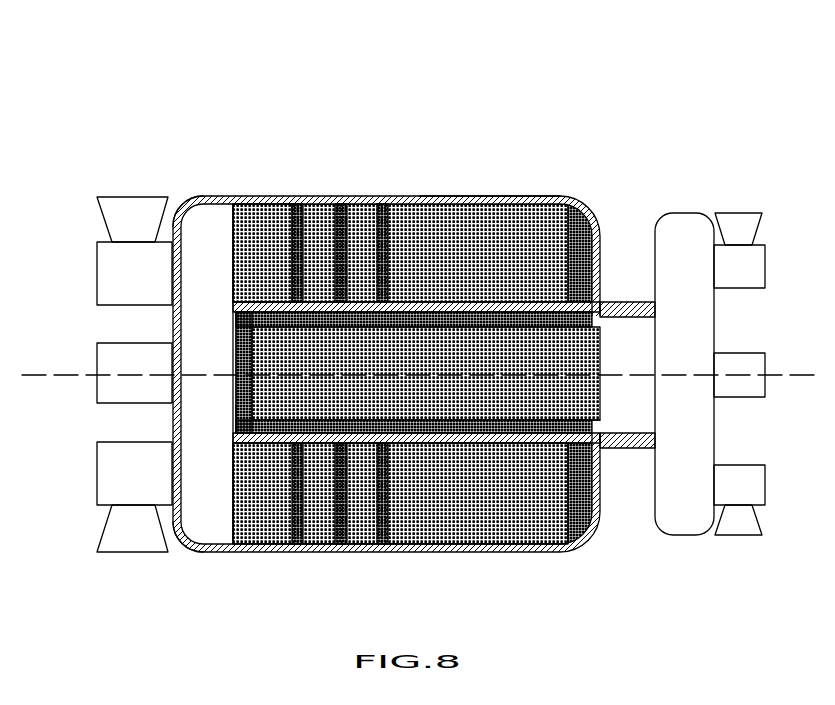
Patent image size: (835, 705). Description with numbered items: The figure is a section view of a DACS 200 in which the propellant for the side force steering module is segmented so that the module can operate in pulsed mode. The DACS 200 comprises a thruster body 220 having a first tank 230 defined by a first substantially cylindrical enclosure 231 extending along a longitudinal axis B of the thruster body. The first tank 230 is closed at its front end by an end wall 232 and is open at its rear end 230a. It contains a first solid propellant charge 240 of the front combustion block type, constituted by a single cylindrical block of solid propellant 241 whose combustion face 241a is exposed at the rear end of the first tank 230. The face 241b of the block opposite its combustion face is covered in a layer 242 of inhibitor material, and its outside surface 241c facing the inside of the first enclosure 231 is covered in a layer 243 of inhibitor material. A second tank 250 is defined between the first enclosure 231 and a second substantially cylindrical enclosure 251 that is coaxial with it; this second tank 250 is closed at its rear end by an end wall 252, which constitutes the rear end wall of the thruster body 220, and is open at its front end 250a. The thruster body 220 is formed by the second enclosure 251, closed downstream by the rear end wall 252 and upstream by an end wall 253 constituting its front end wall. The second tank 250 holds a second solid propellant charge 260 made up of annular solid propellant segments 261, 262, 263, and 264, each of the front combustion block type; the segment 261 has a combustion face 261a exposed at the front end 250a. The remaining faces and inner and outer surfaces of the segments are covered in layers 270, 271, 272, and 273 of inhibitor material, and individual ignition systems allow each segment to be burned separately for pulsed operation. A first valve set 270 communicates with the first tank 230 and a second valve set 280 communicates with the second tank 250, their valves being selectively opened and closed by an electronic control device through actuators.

The DACS 200 is at (536, 101).
The thruster body 220 is at (559, 198).
The first tank 230 is at (232, 433).
The rear end 230a is at (607, 444).
The first substantially cylindrical enclosure 231 is at (432, 302).
The end wall 232 is at (233, 320).
The first solid propellant charge 240 is at (433, 420).
The solid propellant block 241 is at (493, 400).
The combustion face 241a is at (600, 345).
The face opposite combustion face 241b is at (232, 408).
The outside surface 241c is at (547, 420).
The layer of inhibitor material 242 is at (236, 380).
The layer of inhibitor material 243 is at (513, 302).
The second tank 250 is at (400, 515).
The front end 250a is at (232, 553).
The second substantially cylindrical enclosure 251 is at (513, 195).
The rear end wall 252 is at (603, 258).
The front end wall 253 is at (192, 200).
The second solid propellant charge 260 is at (400, 332).
The solid propellant segment 261 is at (262, 230).
The combustion face 261a is at (232, 268).
The solid propellant segment 262 is at (322, 230).
The solid propellant segment 263 is at (373, 235).
The solid propellant segment 264 is at (414, 229).
The first valve set 270 is at (297, 552).
The layer of inhibitor material 271 is at (345, 552).
The layer of inhibitor material 272 is at (388, 552).
The layer of inhibitor material 273 is at (587, 513).
The second valve set 280 is at (110, 555).
The longitudinal axis B is at (418, 353).